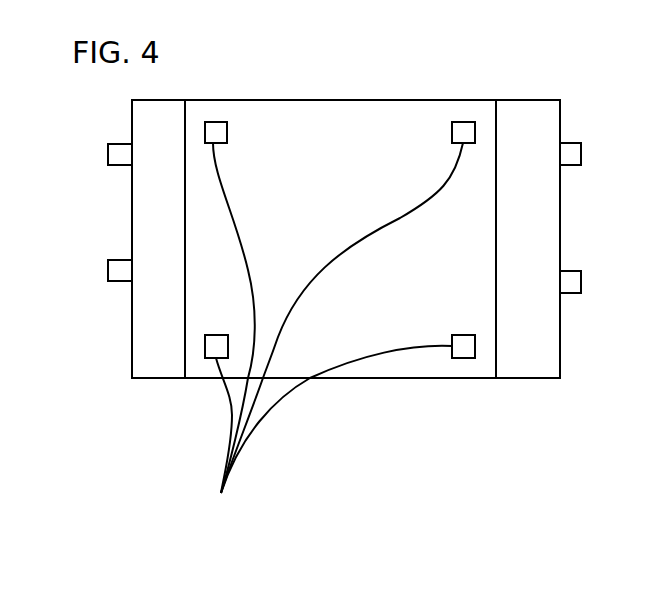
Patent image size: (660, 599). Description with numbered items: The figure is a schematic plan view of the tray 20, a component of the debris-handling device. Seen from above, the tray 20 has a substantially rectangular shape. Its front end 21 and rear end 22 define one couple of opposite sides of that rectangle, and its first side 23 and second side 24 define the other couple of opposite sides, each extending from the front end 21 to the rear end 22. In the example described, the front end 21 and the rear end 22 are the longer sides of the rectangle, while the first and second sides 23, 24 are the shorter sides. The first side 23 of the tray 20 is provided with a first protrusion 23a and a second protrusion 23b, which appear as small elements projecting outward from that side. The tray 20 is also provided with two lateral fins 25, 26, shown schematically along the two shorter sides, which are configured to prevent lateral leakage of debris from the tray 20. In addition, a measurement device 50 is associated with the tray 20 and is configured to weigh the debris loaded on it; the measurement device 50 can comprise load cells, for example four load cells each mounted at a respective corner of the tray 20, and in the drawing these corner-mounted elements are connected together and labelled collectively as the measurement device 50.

The tray 20 is at (369, 412).
The front end 21 is at (387, 113).
The rear end 22 is at (463, 378).
The first side 23 is at (129, 218).
The first protrusion 23a is at (119, 273).
The second protrusion 23b is at (118, 153).
The second side 24 is at (560, 212).
The lateral fin 25 is at (142, 357).
The lateral fin 26 is at (528, 368).
The measurement device 50 is at (340, 324).